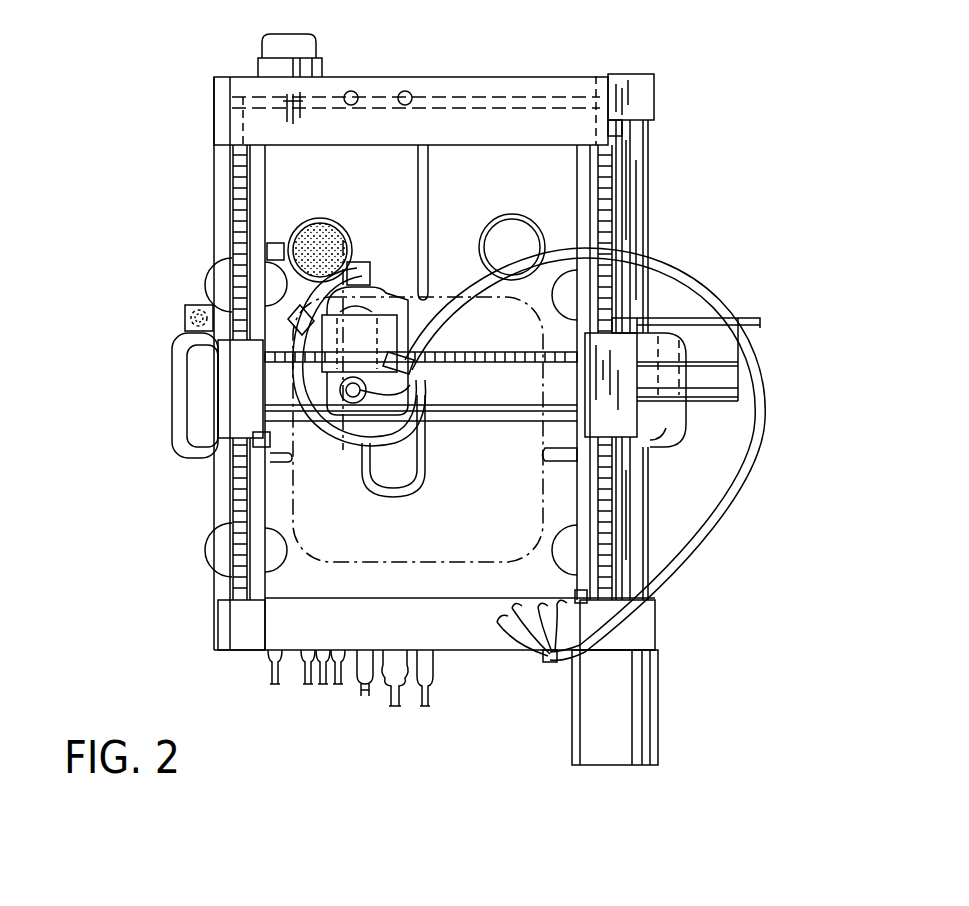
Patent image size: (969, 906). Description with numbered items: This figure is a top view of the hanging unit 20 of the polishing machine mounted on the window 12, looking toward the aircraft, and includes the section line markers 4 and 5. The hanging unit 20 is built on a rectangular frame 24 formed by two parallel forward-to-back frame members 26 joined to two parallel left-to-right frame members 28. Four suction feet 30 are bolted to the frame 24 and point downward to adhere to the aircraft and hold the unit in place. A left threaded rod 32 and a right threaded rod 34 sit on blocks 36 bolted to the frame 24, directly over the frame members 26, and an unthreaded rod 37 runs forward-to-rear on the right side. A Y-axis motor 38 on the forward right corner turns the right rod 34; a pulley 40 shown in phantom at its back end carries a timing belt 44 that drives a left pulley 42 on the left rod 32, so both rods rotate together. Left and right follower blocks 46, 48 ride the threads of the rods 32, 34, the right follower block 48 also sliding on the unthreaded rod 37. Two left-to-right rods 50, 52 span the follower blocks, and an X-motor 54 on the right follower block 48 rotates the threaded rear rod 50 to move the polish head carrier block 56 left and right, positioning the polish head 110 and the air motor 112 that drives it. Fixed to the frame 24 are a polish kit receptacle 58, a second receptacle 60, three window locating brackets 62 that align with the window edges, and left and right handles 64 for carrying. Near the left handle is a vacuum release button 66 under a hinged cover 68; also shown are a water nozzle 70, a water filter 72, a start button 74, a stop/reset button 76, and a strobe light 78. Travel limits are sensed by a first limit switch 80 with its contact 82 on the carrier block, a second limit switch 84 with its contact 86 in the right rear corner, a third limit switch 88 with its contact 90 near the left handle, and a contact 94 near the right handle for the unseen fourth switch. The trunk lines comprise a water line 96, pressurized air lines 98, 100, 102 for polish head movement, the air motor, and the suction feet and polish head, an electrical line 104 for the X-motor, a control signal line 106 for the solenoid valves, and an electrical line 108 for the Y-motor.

The section line 4- 4 is at (195, 537).
The section line 5- 5 is at (410, 182).
The window 12 is at (450, 560).
The hanging unit 20 is at (145, 243).
The frame 24 is at (546, 50).
The forward-to-back frame members 26 is at (216, 160).
The left-to-right frame members 28 is at (436, 77).
The suction feet 30 is at (210, 275).
The left threaded rod 32 is at (233, 186).
The right threaded rod 34 is at (604, 186).
The blocks 36 is at (240, 77).
The unthreaded rod 37 is at (645, 500).
The Y-axis motor 38 is at (655, 700).
The pulley 40 is at (598, 74).
The left pulley 42 is at (215, 96).
The timing belt 44 is at (470, 90).
The left follower block 46 is at (232, 426).
The right follower block 48 is at (628, 335).
The rear left-to-right rod 50 is at (466, 356).
The left-to-right rod 52 is at (512, 422).
The X-motor 54 is at (762, 318).
The polish head carrier block 56 is at (363, 297).
The polish kit receptacle 58 is at (306, 220).
The second receptacle 60 is at (522, 216).
The window locating brackets 62 is at (436, 216).
The handles 64 is at (180, 406).
The vacuum release button 66 is at (185, 318).
The hinged cover 68 is at (195, 306).
The water nozzle 70 is at (366, 262).
The water filter 72 is at (288, 356).
The start button 74 is at (405, 91).
The stop/reset button 76 is at (354, 91).
The strobe light 78 is at (286, 34).
The first limit switch 80 is at (575, 594).
The contact 82 is at (416, 437).
The second limit switch 84 is at (622, 350).
The contact 86 is at (620, 132).
The third limit switch 88 is at (393, 446).
The contact 90 is at (262, 447).
The contact 94 is at (553, 462).
The water line 96 is at (318, 388).
The pressurized air line 98 is at (298, 674).
The pressurized air line 100 is at (318, 688).
The pressurized air line 102 is at (342, 688).
The electrical line 104 is at (365, 696).
The electrical control signal line 106 is at (395, 708).
The electrical line 108 is at (428, 703).
The polish head 110 is at (340, 388).
The air motor 112 is at (368, 300).